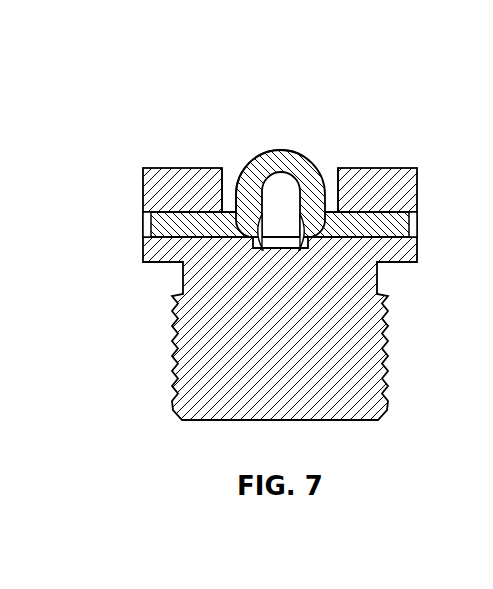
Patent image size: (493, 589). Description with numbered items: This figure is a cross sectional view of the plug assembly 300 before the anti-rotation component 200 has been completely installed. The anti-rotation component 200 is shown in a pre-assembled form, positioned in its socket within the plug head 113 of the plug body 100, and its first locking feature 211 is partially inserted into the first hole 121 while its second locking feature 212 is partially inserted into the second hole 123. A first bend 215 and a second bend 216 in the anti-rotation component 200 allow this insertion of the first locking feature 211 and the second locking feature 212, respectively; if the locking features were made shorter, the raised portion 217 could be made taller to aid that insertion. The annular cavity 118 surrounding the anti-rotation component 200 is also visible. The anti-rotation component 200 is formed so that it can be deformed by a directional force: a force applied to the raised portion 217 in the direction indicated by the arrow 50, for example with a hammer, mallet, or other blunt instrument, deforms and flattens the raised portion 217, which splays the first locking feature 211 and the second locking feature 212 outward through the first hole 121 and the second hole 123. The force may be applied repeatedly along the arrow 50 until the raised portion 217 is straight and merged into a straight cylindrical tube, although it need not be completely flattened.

The plug assembly 300 is at (283, 240).
The fitting body 100 is at (417, 180).
The plug head 113 is at (417, 206).
The anti-rotation component 200 is at (303, 150).
The raised portion 217 is at (290, 148).
The annular cavity 118 is at (239, 168).
The first hole 121 is at (227, 203).
The second hole 123 is at (332, 205).
The first locking feature 211 is at (150, 222).
The second locking feature 212 is at (410, 224).
The first bend 215 is at (262, 252).
The second bend 216 is at (302, 251).
The arrow 50 is at (279, 134).